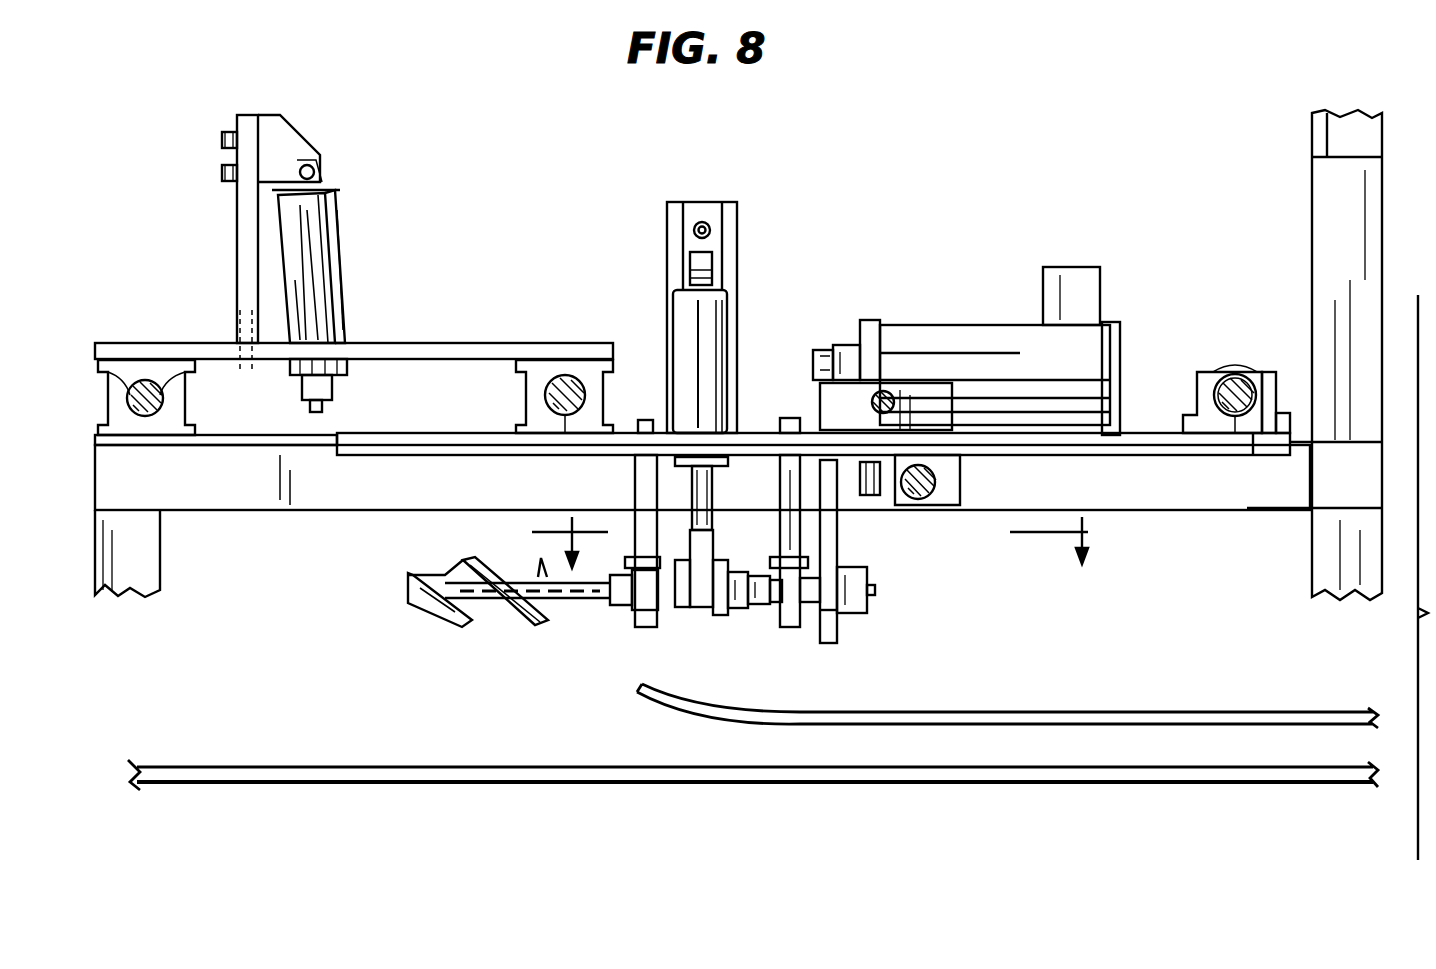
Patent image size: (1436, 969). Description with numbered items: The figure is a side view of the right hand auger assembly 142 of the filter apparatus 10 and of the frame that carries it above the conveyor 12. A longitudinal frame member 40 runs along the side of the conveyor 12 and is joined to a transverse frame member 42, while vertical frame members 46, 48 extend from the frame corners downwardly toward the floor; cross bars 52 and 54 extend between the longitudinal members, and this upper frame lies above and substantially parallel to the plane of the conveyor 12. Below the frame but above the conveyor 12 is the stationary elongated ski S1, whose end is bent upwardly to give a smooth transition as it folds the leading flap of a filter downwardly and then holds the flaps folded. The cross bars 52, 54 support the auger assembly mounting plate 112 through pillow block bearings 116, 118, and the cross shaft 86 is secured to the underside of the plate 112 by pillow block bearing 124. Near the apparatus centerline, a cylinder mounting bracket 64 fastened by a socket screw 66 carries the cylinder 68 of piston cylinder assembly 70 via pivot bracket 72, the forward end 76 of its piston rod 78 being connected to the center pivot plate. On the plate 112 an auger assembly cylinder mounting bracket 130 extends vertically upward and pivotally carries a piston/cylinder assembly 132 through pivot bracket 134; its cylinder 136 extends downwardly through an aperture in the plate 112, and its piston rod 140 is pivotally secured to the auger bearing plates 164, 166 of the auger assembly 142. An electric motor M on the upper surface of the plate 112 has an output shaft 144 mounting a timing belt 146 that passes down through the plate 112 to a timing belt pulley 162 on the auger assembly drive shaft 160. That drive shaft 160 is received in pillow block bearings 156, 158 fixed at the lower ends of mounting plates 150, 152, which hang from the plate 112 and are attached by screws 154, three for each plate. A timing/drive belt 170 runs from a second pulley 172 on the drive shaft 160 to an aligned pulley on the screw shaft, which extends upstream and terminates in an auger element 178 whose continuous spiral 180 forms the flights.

The filter apparatus 10 is at (815, 557).
The conveyor 12 is at (287, 768).
The longitudinal frame member 40 is at (236, 500).
The transverse frame member 42 is at (145, 375).
The vertical frame member 46 is at (148, 548).
The vertical frame member 48 is at (1322, 552).
The cross bar 52 is at (560, 374).
The cross bar 54 is at (1258, 368).
The cylinder mounting bracket 64 is at (248, 235).
The socket screw 66 is at (237, 348).
The cylinder 68 is at (336, 224).
The piston cylinder assembly 70 is at (350, 258).
The pivot bracket 72 is at (296, 132).
The forward end 76 is at (690, 566).
The piston rod 78 is at (310, 408).
The cross shaft 86 is at (927, 500).
The auger assembly mounting plate 112 is at (472, 448).
The pillow block bearing 116 is at (590, 396).
The pillow block bearing 118 is at (1202, 385).
The pillow block bearing 124 is at (950, 490).
The auger assembly cylinder mounting bracket 130 is at (738, 236).
The piston/cylinder assembly 132 is at (665, 334).
The pivot bracket 134 is at (683, 226).
The cylinder 136 is at (730, 397).
The piston rod 140 is at (712, 500).
The right hand auger assembly 142 is at (489, 601).
The output shaft 144 is at (858, 345).
The timing belt 146 is at (825, 520).
The mounting plate 150 is at (635, 487).
The mounting plate 152 is at (805, 546).
The screws 154 is at (646, 418).
The pillow block bearing 156 is at (625, 612).
The pillow block bearing 158 is at (828, 646).
The auger assembly drive shaft 160 is at (770, 622).
The timing belt pulley 162 is at (850, 626).
The auger bearing plate 164 is at (672, 620).
The auger bearing plate 166 is at (722, 622).
The timing/drive belt 170 is at (745, 582).
The second pulley 172 is at (770, 608).
The auger element 178 is at (502, 578).
The continuous spiral 180 is at (452, 578).
The electric motor M is at (962, 330).
The ski S1 is at (1050, 712).